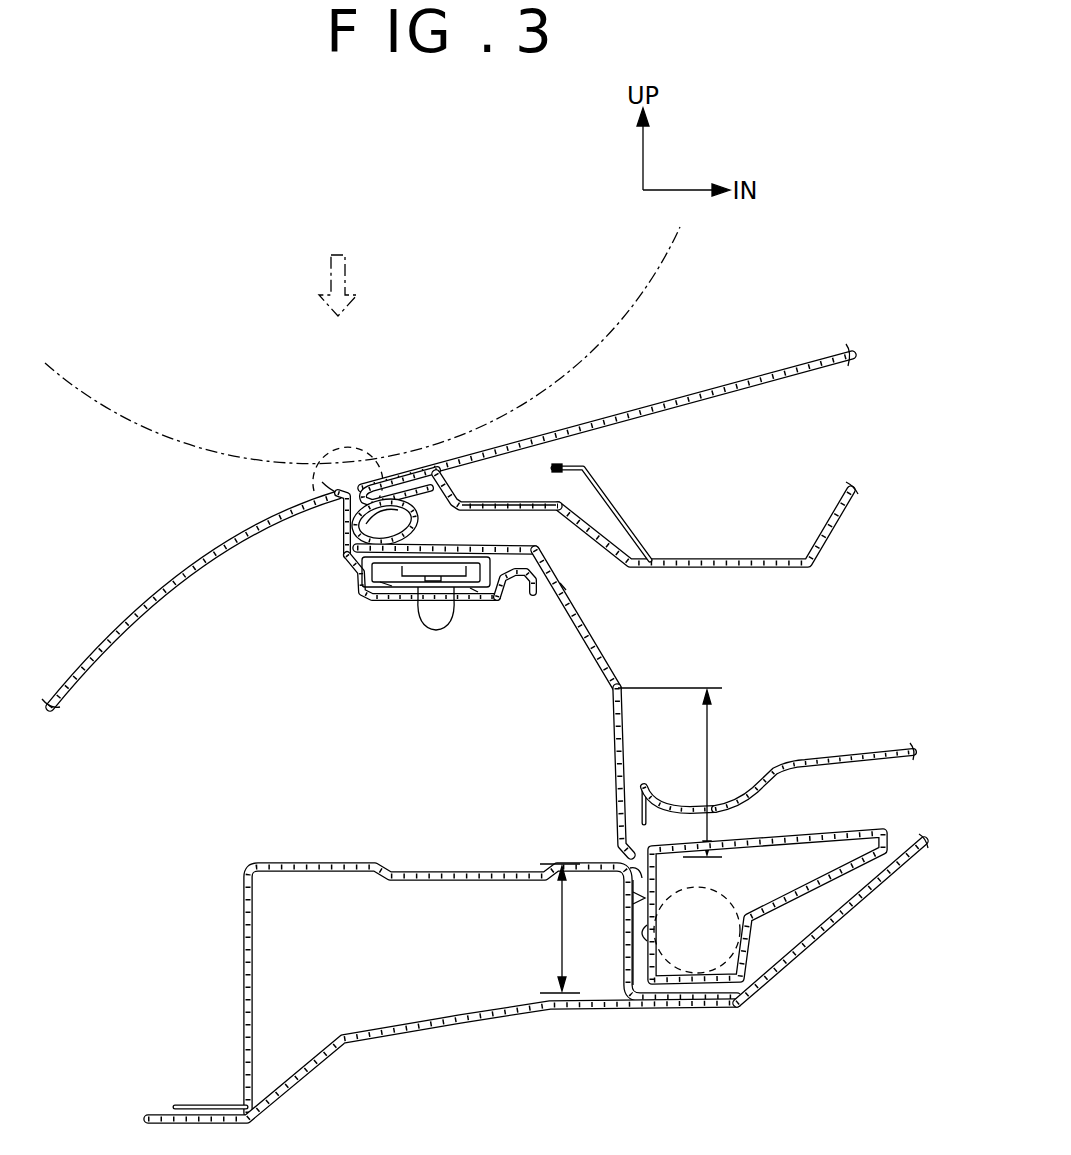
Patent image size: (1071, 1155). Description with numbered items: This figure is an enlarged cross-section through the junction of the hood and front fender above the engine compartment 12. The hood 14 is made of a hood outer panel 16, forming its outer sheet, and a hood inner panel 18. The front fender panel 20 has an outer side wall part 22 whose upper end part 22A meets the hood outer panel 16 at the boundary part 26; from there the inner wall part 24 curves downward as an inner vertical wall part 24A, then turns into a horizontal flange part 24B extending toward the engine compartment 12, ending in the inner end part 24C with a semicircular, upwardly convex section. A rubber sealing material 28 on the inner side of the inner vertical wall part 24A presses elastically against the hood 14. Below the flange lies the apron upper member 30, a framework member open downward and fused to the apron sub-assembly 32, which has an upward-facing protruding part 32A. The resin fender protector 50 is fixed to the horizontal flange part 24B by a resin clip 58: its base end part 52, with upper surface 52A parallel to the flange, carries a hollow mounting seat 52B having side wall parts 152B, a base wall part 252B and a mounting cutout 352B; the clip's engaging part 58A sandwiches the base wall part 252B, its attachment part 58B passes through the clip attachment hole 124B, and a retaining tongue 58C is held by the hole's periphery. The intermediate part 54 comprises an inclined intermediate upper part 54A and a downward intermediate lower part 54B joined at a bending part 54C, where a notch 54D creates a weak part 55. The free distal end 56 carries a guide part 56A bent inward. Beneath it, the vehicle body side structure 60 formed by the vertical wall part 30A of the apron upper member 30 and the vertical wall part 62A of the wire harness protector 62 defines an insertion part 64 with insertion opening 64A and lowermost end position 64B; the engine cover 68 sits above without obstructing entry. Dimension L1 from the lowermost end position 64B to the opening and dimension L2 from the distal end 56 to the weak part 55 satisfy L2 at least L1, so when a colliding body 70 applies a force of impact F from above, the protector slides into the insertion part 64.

The engine compartment 12 is at (832, 667).
The hood 14 is at (610, 430).
The hood outer panel 16 is at (622, 410).
The hood inner panel 18 is at (597, 530).
The front fender panel 20 is at (190, 556).
The outer side wall part 22 is at (121, 612).
The upper end part 22A is at (322, 480).
The inner wall part 24 is at (401, 597).
The inner vertical wall part 24A is at (343, 540).
The horizontal flange part 24B is at (385, 600).
The inner end part 24C is at (528, 596).
The boundary part 26 is at (349, 446).
The sealing material 28 is at (393, 472).
The apron upper member 30 is at (456, 990).
The vertical wall part 30A is at (618, 957).
The apron sub-assembly 32 is at (542, 952).
The protruding part 32A is at (916, 840).
The fender protector 50 is at (525, 620).
The base end part 52 is at (458, 515).
The upper surface 52A is at (474, 503).
The mounting seat 52B is at (562, 466).
The intermediate part 54 is at (655, 702).
The intermediate upper part 54A is at (577, 612).
The intermediate lower part 54B is at (628, 745).
The bending part 54C is at (621, 684).
The notch 54D is at (608, 697).
The weak part 55 is at (636, 682).
The distal end 56 is at (640, 835).
The guide part 56A is at (620, 850).
The clip 58 is at (428, 640).
The engaging part 58A is at (463, 546).
The attachment part 58B is at (448, 630).
The retaining tongue 58C is at (421, 624).
The vehicle body side structure 60 is at (683, 974).
The wire harness protector 62 is at (767, 956).
The vertical wall part 62A is at (685, 897).
The insertion part 64 is at (604, 911).
The insertion opening 64A is at (622, 872).
The lowermost end position 64B is at (648, 937).
The engine cover 68 is at (848, 760).
The colliding body 70 is at (112, 412).
The clip attachment hole 124B is at (452, 612).
The side wall parts 152B is at (562, 584).
The base wall part 252B is at (472, 590).
The mounting cutout 352B is at (388, 581).
The dimension L1 is at (556, 922).
The dimension L2 is at (709, 750).
The force of impact F is at (352, 265).